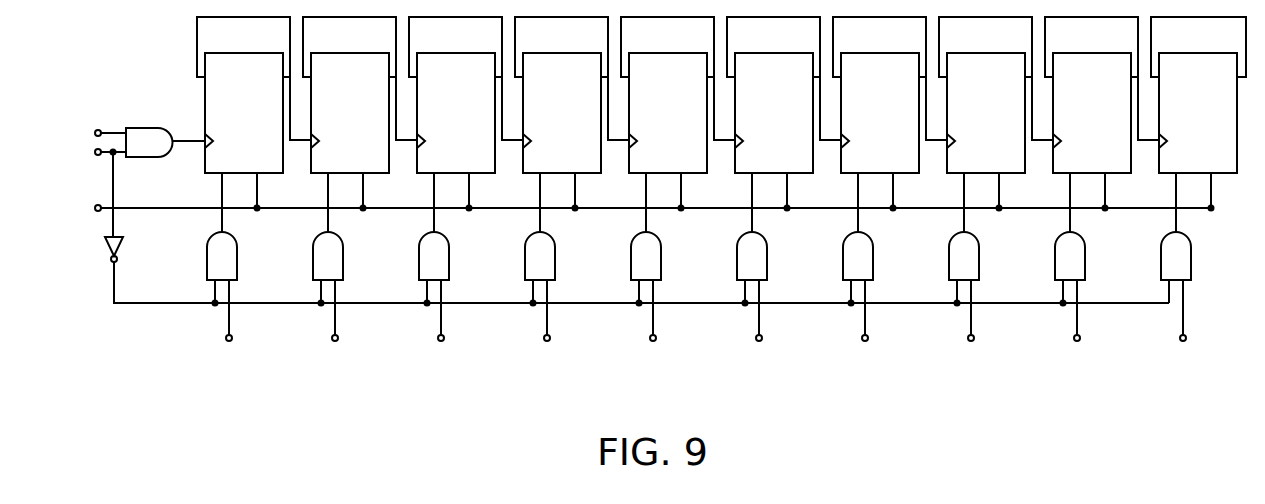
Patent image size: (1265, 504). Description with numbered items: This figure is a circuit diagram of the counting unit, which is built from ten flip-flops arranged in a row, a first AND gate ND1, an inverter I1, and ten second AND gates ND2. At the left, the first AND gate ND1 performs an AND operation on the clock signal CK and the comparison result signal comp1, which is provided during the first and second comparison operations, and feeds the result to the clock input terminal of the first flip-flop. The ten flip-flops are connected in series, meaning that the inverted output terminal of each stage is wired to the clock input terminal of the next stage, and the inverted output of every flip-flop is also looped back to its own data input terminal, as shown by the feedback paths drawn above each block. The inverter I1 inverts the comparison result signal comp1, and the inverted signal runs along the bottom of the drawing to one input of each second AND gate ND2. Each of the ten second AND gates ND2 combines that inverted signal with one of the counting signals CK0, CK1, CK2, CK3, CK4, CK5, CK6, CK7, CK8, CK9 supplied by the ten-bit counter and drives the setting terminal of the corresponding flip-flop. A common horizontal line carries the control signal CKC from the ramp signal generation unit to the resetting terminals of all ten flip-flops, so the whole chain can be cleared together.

The first AND gate ND1 is at (165, 129).
The second AND gate ND2 is at (203, 269).
The inverter I1 is at (102, 270).
The clock signal CK is at (97, 132).
The comparison result signal comp1 is at (81, 189).
The control signal CKC is at (634, 207).
The counting signal CK0 is at (229, 321).
The counting signal CK1 is at (335, 321).
The counting signal CK2 is at (441, 321).
The counting signal CK3 is at (547, 321).
The counting signal CK4 is at (653, 321).
The counting signal CK5 is at (759, 321).
The counting signal CK6 is at (865, 321).
The counting signal CK7 is at (971, 321).
The counting signal CK8 is at (1077, 321).
The counting signal CK9 is at (1183, 321).